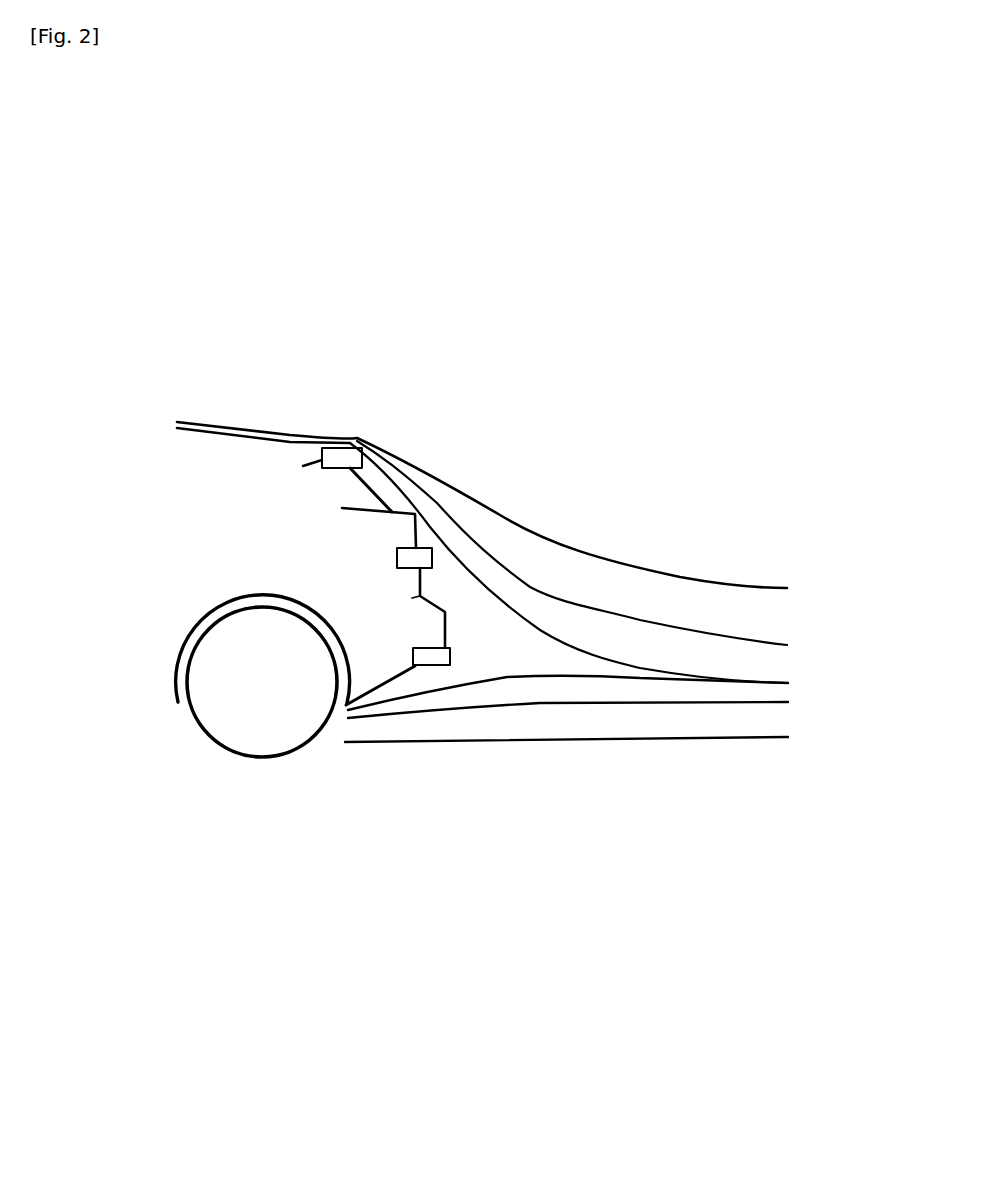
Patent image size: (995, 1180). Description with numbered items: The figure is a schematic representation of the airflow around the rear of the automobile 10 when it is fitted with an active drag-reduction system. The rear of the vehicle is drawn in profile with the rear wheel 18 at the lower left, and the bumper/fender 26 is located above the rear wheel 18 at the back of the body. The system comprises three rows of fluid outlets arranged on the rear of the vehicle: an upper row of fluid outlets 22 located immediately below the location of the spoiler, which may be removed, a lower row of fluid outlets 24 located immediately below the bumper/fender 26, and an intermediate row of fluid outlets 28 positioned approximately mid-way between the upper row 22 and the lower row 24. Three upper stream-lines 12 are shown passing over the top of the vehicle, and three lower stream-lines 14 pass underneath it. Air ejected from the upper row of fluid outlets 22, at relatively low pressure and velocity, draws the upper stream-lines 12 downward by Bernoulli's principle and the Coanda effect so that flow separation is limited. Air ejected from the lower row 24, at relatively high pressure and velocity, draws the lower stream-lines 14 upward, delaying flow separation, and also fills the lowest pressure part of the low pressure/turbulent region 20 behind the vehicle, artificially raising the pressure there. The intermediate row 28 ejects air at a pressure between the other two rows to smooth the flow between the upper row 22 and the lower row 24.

The automobile 10 is at (238, 531).
The upper stream-lines 12 is at (638, 555).
The lower stream-lines 14 is at (578, 745).
The rear wheel 18 is at (269, 680).
The low pressure/turbulent region 20 is at (493, 643).
The upper row of fluid outlets 22 is at (343, 455).
The lower row of fluid outlets 24 is at (436, 658).
The bumper/fender 26 is at (445, 612).
The intermediate row of fluid outlets 28 is at (423, 558).